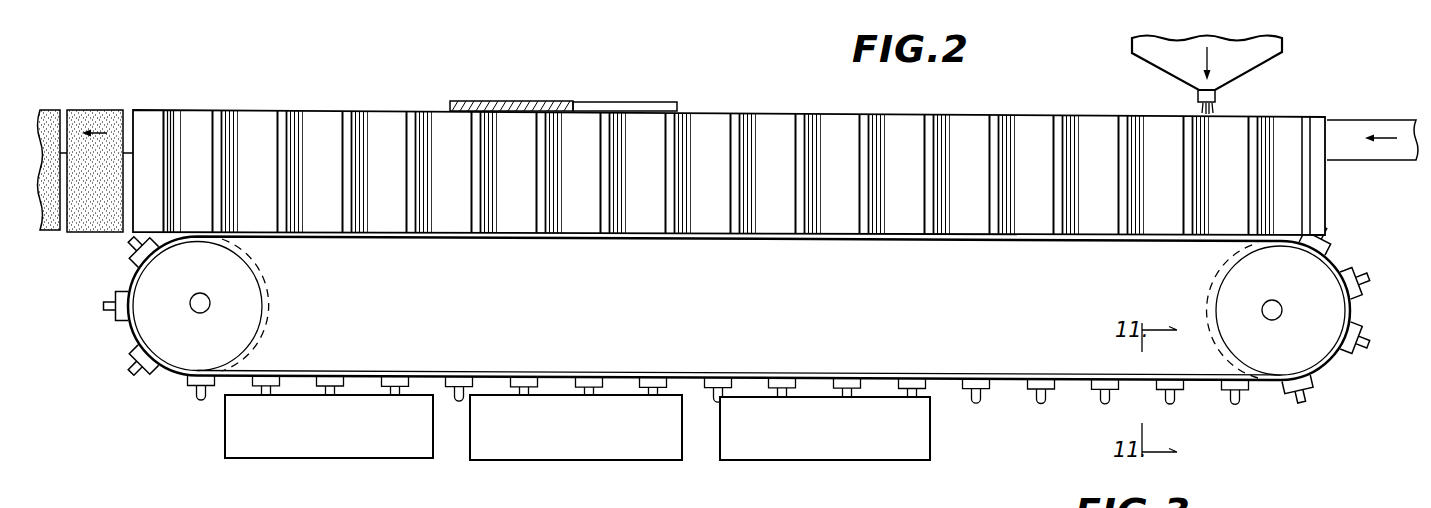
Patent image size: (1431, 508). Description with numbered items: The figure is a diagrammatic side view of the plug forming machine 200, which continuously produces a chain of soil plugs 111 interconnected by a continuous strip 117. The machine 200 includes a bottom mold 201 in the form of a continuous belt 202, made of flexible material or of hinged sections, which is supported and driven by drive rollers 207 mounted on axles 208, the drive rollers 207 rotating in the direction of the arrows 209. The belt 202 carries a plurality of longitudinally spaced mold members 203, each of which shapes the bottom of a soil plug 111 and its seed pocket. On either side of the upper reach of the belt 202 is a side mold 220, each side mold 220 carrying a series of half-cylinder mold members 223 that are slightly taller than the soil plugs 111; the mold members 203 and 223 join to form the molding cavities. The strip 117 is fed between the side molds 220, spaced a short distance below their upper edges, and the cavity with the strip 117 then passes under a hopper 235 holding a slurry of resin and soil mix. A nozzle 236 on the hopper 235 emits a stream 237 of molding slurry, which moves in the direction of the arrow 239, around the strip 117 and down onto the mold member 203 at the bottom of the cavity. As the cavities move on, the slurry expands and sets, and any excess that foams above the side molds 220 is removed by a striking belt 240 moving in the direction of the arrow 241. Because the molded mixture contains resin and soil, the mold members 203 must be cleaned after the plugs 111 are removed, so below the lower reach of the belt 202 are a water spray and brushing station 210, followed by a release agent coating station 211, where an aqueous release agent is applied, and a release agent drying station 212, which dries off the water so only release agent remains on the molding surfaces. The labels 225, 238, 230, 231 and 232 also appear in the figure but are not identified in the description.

The plug forming machine 200 is at (177, 59).
The strip 117 is at (128, 112).
The soil plugs 111 is at (90, 224).
The side mold 220 is at (373, 106).
The mold members 223 is at (218, 110).
The mold slats 225 is at (190, 127).
The striking belt 240 is at (503, 100).
The arrow 241 is at (577, 90).
The hopper 235 is at (1267, 63).
The arrow 239 is at (1203, 55).
The nozzle 236 is at (1218, 98).
The stream 237 is at (1220, 110).
The direction arrow 238 is at (103, 137).
The bottom mold 201 is at (178, 387).
The continuous belt 202 is at (297, 375).
The mold members 203 is at (133, 350).
The drive rollers 207 is at (267, 295).
The axles 208 is at (205, 313).
The arrows 209 is at (146, 313).
The water spray and brushing station 210 is at (223, 437).
The release agent coating station 211 is at (522, 456).
The release agent drying station 212 is at (922, 445).
The station 230 is at (185, 500).
The station 231 is at (483, 500).
The station 232 is at (783, 500).